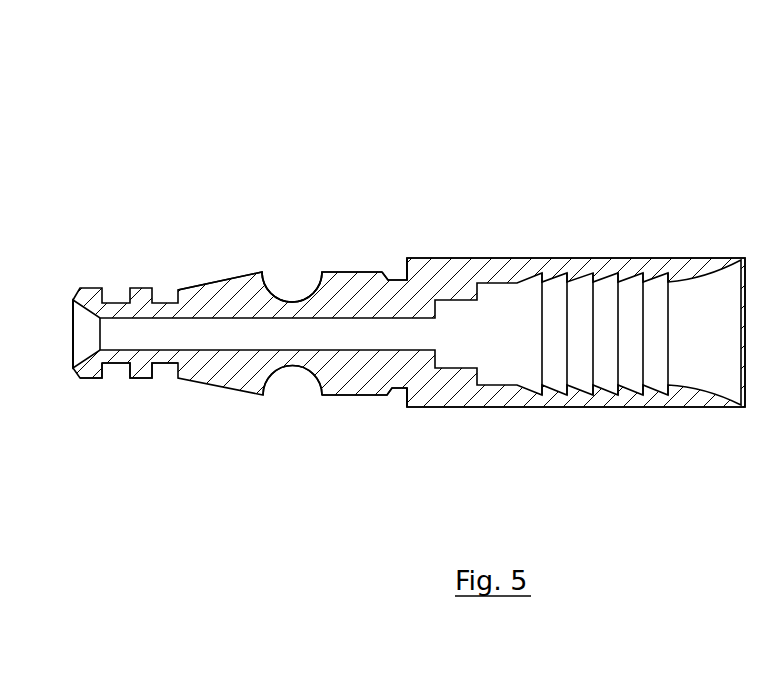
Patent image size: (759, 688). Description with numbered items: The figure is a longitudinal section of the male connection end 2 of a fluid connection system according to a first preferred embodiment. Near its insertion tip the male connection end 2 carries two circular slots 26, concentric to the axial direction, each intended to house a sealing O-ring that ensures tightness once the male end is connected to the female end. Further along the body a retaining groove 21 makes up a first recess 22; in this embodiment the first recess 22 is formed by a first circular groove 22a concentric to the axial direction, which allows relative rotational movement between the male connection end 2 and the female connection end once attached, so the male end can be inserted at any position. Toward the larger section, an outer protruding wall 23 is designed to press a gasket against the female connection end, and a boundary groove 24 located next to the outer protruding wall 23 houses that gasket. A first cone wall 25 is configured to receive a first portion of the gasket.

The male connection end 2 is at (108, 130).
The retaining groove 21 is at (292, 383).
The first recess 22 is at (295, 302).
The first circular groove 22a is at (280, 287).
The outer protruding wall 23 is at (407, 272).
The boundary groove 24 is at (395, 266).
The first cone wall 25 is at (387, 389).
The circular slots 26 is at (112, 363).